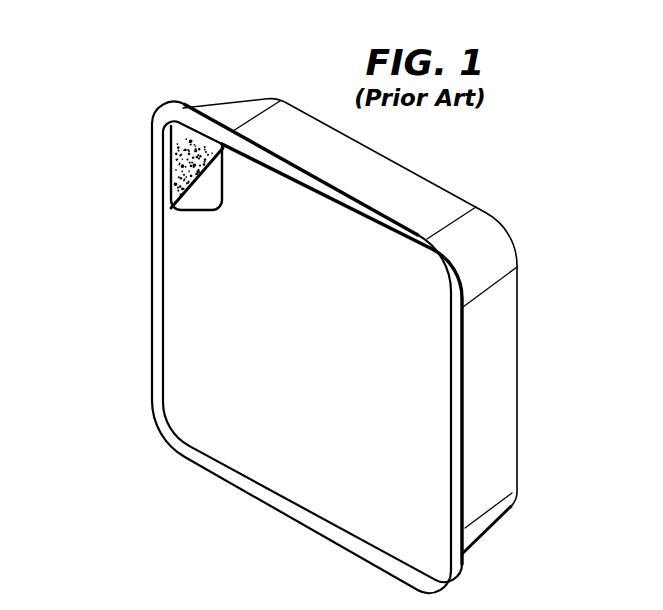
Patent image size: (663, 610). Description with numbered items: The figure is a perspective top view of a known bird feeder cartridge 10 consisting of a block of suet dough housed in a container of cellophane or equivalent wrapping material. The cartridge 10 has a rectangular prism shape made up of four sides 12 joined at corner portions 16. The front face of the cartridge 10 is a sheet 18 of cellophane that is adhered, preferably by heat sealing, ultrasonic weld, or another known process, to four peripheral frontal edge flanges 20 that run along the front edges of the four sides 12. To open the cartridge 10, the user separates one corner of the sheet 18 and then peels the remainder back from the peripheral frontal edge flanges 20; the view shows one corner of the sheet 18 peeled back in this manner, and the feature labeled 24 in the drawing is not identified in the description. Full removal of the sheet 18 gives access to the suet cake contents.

The cartridge 10 is at (149, 458).
The sides 12 is at (443, 214).
The corner portions 16 is at (258, 108).
The sheet 18 is at (292, 364).
The peripheral frontal edge flanges 20 is at (190, 121).
The corner pocket 24 is at (178, 152).